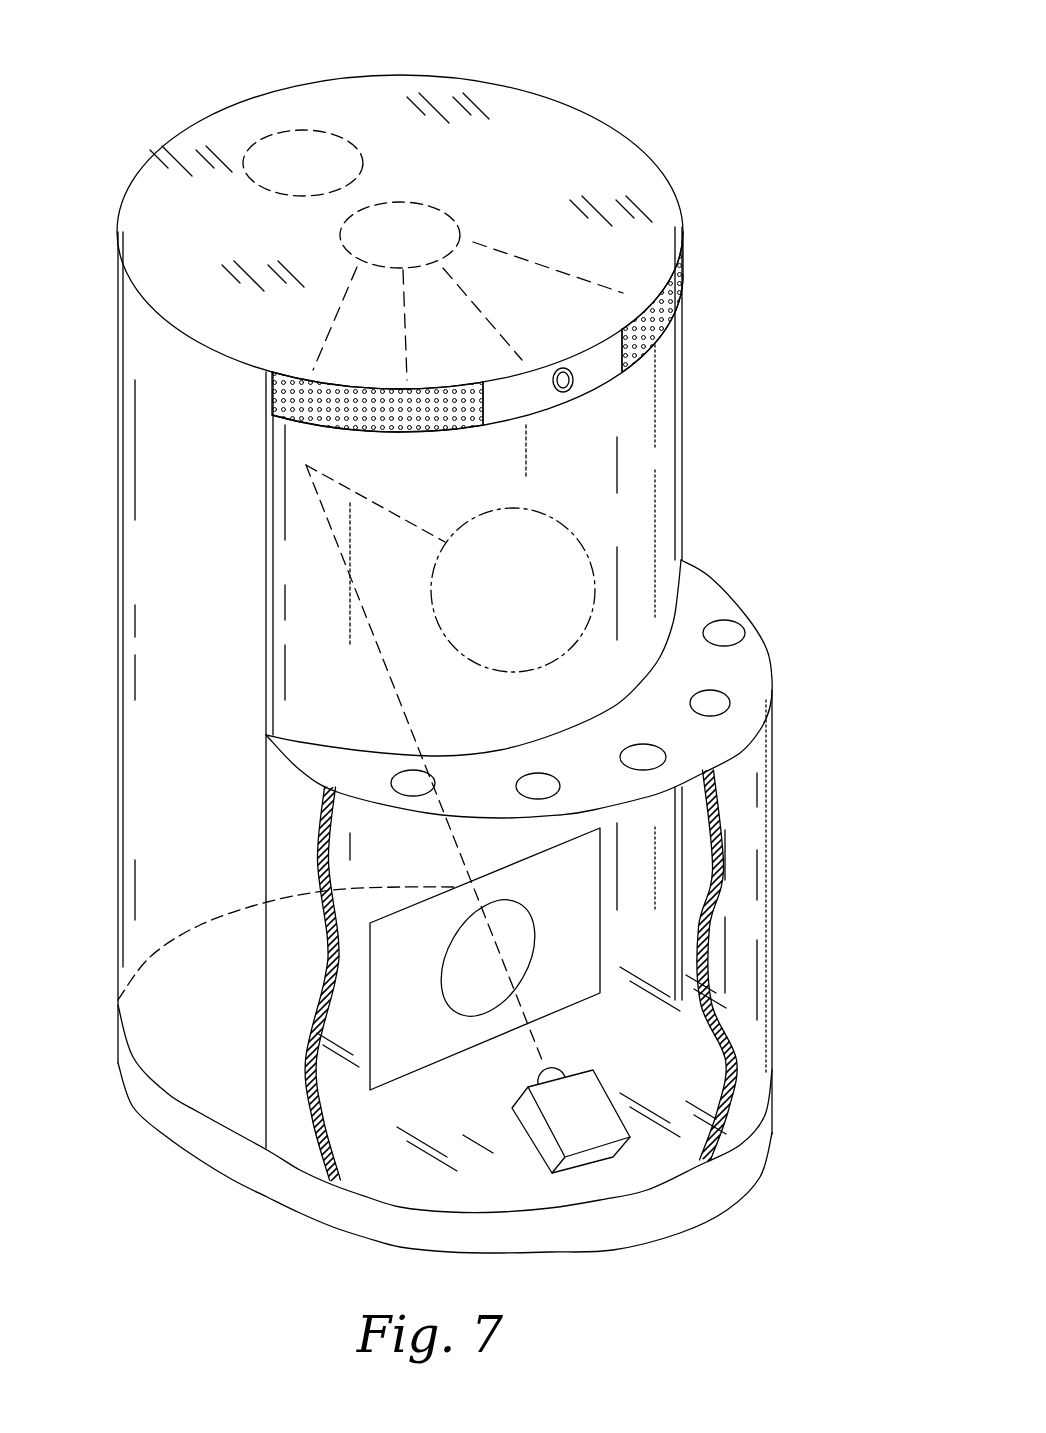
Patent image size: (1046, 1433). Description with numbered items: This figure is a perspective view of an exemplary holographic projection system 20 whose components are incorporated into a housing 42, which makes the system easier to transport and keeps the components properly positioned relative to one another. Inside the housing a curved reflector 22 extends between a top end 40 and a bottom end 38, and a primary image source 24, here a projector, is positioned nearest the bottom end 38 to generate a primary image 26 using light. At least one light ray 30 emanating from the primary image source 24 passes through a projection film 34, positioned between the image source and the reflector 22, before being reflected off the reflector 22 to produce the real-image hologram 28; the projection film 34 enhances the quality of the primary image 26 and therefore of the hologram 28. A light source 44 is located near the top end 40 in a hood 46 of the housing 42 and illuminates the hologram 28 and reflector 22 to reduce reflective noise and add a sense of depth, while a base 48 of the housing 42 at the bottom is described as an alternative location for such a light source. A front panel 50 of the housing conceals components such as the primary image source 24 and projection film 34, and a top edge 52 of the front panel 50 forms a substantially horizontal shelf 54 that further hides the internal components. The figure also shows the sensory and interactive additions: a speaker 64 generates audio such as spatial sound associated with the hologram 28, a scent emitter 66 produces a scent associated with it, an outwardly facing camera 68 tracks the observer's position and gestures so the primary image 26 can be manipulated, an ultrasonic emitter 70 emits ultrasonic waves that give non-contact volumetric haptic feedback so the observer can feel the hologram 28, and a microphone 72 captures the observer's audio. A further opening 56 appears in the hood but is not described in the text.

The holographic projection system 20 is at (762, 76).
The curved reflector 22 is at (695, 423).
The primary image source 24 is at (602, 1100).
The primary image 26 is at (473, 1002).
The hologram 28 is at (577, 553).
The light ray 30 is at (537, 1033).
The projection film 34 is at (390, 1067).
The bottom end 38 is at (217, 1118).
The top end 40 is at (180, 334).
The housing 42 is at (780, 1096).
The light source 44 is at (443, 217).
The hood 46 is at (665, 203).
The base 48 is at (705, 1185).
The front panel 50 is at (752, 908).
The top edge 52 is at (742, 740).
The shelf 54 is at (760, 668).
The opening 56 is at (282, 148).
The speaker 64 is at (273, 403).
The scent emitter 66 is at (407, 778).
The camera 68 is at (570, 384).
The ultrasonic emitter 70 is at (540, 780).
The microphone 72 is at (647, 752).